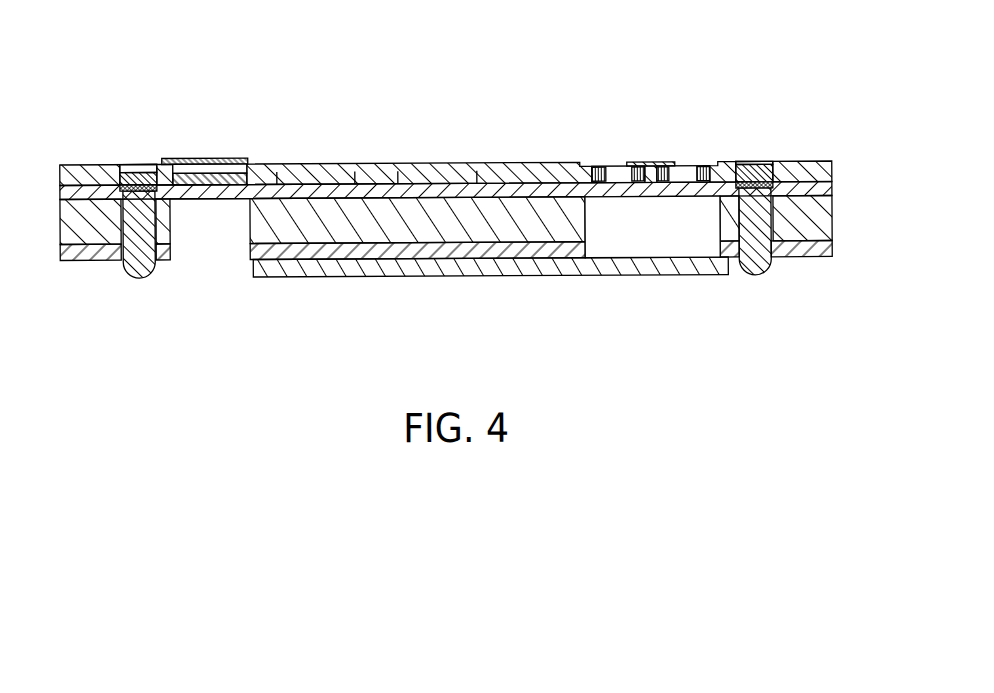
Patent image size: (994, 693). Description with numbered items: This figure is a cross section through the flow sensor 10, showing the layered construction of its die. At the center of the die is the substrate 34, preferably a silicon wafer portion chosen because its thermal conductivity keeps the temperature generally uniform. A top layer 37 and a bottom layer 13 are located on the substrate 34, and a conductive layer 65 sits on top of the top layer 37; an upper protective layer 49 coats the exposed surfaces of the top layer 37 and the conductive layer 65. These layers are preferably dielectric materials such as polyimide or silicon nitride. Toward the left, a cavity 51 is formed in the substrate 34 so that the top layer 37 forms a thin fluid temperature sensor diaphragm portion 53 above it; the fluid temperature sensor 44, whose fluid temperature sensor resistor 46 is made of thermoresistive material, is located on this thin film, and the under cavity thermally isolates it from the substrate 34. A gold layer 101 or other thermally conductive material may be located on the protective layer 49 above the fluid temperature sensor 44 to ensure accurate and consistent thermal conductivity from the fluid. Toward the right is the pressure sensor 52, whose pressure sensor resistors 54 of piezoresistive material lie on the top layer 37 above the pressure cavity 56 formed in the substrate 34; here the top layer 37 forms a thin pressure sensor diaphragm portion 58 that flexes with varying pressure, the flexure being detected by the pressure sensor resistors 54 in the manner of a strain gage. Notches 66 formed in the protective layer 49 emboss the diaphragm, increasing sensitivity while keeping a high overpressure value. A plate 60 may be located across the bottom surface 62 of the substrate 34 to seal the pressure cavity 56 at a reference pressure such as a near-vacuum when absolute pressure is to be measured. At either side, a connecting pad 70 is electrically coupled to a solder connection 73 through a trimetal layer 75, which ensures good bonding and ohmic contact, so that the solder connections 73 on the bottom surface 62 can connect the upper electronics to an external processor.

The flow sensor 10 is at (80, 273).
The bottom layer 13 is at (833, 248).
The substrate 34 is at (833, 197).
The top layer 37 is at (447, 182).
The fluid temperature sensor 44 is at (233, 163).
The fluid temperature sensor resistor 46 is at (214, 160).
The upper protective layer 49 is at (338, 162).
The cavity 51 is at (217, 262).
The pressure sensor 52 is at (649, 100).
The fluid temperature sensor diaphragm portion 53 is at (187, 200).
The pressure sensor resistor 54 is at (652, 163).
The pressure cavity 56 is at (667, 250).
The pressure sensor diaphragm portion 58 is at (613, 202).
The plate 60 is at (377, 276).
The bottom surface 62 is at (313, 260).
The conductive layer 65 is at (128, 164).
The notches 66 is at (603, 165).
The connecting pad 70 is at (141, 172).
The solder connection 73 is at (130, 276).
The trimetal layer 75 is at (122, 198).
The gold layer 101 is at (188, 157).